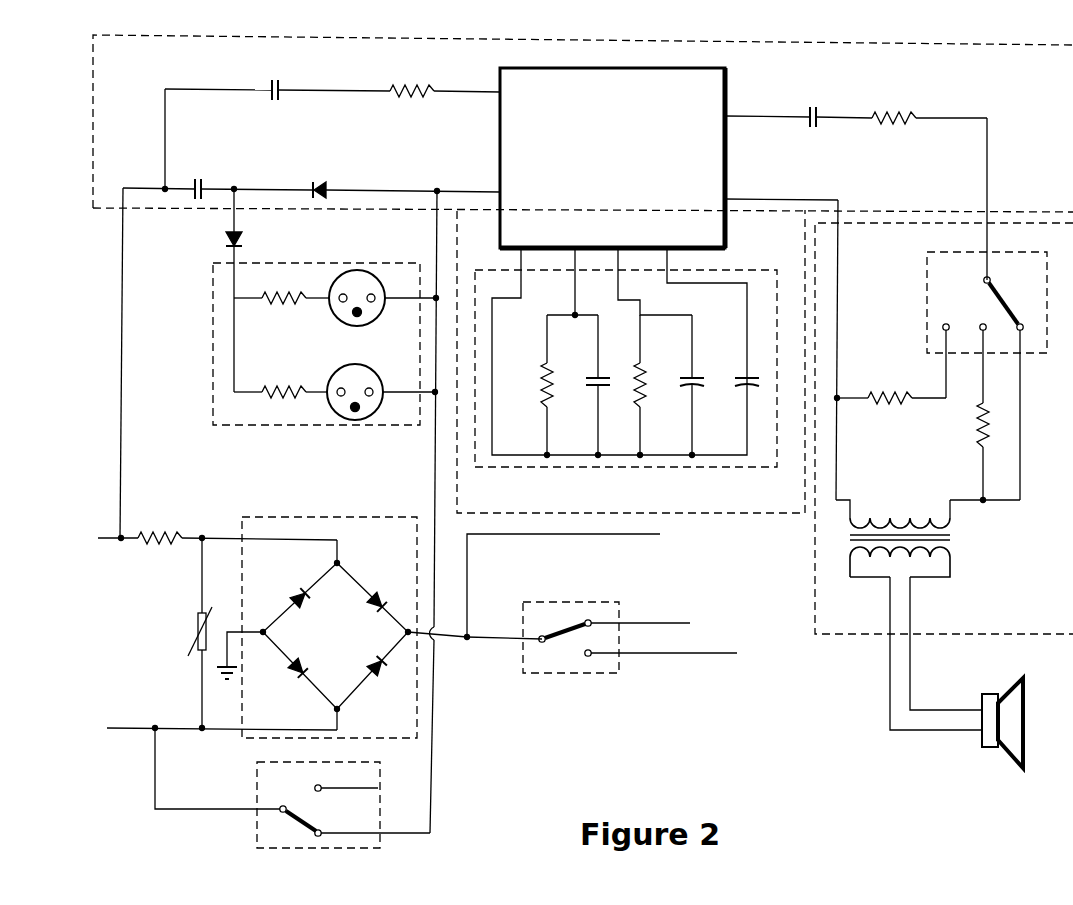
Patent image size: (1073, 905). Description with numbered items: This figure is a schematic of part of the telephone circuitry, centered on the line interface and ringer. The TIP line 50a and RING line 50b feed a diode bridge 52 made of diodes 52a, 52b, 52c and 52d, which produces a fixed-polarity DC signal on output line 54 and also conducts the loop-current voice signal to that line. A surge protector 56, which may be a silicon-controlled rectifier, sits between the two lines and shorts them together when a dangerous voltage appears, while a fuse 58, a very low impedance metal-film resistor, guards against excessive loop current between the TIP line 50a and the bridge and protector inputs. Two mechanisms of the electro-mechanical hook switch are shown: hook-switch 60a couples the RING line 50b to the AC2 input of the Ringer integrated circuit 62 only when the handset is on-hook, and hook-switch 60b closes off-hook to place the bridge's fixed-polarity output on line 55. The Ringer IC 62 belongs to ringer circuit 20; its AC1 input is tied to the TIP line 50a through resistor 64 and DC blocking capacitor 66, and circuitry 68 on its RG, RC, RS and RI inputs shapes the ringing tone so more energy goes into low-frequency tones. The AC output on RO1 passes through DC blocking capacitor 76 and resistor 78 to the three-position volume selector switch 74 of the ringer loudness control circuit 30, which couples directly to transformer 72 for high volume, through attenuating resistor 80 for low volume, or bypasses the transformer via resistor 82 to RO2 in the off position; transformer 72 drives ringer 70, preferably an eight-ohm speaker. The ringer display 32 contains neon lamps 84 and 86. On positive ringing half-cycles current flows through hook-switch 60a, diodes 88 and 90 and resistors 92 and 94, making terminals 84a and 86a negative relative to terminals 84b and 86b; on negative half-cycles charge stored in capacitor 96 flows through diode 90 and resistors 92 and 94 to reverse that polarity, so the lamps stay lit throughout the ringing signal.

The ringer circuit 20 is at (631, 384).
The ringer loudness control circuit 30 is at (936, 518).
The ringer display 32 is at (321, 349).
The TIP line 50a is at (105, 541).
The RING line 50b is at (121, 727).
The diode bridge 52 is at (317, 606).
The diode 52a is at (297, 588).
The diode 52b is at (380, 592).
The diode 52c is at (380, 680).
The diode 52d is at (297, 680).
The output line 54 is at (653, 538).
The line 55 is at (656, 657).
The surge protector 56 is at (196, 627).
The fuse 58 is at (158, 532).
The hook-switch 60a is at (257, 833).
The hook-switch 60b is at (560, 674).
The Ringer integrated circuit 62 is at (728, 75).
The resistor 64 is at (402, 98).
The DC blocking capacitor 66 is at (272, 105).
The circuitry 68 is at (765, 468).
The ringer 70 is at (1023, 770).
The transformer 72 is at (850, 580).
The ringer volume selector switch 74 is at (1047, 355).
The DC blocking capacitor 76 is at (814, 100).
The resistor 78 is at (895, 108).
The resistor 80 is at (976, 446).
The resistor 82 is at (886, 388).
The indicator light 84 is at (360, 286).
The terminal 84a is at (315, 304).
The terminal 84b is at (407, 304).
The indicator light 86 is at (360, 406).
The terminal 86a is at (316, 388).
The terminal 86b is at (407, 388).
The diode 88 is at (323, 176).
The diode 90 is at (250, 236).
The resistor 92 is at (268, 304).
The resistor 94 is at (288, 386).
The capacitor 96 is at (199, 172).